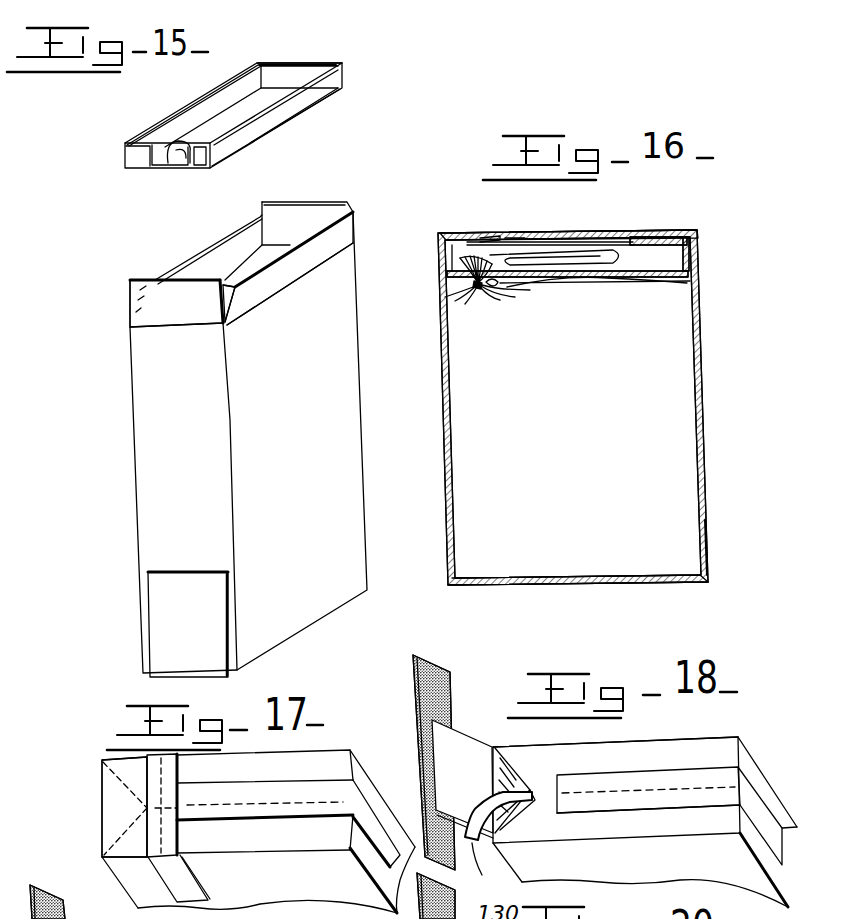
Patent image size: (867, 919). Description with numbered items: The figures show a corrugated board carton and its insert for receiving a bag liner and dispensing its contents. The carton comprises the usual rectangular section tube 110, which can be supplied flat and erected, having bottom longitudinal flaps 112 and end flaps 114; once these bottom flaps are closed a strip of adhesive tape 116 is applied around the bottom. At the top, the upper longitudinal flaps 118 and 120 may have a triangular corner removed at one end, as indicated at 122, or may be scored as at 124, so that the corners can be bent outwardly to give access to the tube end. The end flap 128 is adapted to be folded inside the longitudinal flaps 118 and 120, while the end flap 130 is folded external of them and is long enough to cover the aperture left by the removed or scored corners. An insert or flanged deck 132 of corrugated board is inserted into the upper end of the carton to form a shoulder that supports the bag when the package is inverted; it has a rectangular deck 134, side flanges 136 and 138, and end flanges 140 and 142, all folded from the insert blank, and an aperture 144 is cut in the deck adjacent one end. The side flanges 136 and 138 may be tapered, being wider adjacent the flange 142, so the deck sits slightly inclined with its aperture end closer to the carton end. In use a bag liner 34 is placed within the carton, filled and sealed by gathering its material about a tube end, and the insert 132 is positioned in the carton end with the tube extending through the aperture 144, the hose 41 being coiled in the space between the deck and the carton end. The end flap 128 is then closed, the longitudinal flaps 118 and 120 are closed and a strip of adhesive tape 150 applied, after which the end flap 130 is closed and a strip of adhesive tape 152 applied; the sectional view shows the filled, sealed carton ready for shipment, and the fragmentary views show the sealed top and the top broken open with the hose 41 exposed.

In FIG. 16, the bag liner 34 is at (670, 297).
In FIG. 16, the hose 41 is at (600, 247).
In FIG. 18, the hose 41 is at (498, 851).
In FIG. 15, the rectangular section tube 110 is at (340, 455).
In FIG. 16, the rectangular section tube 110 is at (700, 370).
In FIG. 18, the rectangular section tube 110 is at (645, 822).
In FIG. 16, the bottom longitudinal flaps 112 is at (552, 587).
In FIG. 16, the end flaps 114 is at (473, 578).
In FIG. 15, the strip of adhesive tape 116 is at (200, 605).
In FIG. 16, the strip of adhesive tape 116 is at (707, 520).
In FIG. 15, the upper longitudinal flap 118 is at (275, 275).
In FIG. 18, the upper longitudinal flap 118 is at (697, 822).
In FIG. 15, the upper longitudinal flap 120 is at (213, 253).
In FIG. 16, the upper longitudinal flap 120 is at (595, 240).
In FIG. 18, the upper longitudinal flap 120 is at (685, 748).
In FIG. 15, the removed triangular corner 122 is at (140, 307).
In FIG. 18, the removed triangular corner 122 is at (513, 767).
In FIG. 17, the scoring 124 is at (101, 823).
In FIG. 15, the end flap 128 is at (317, 207).
In FIG. 16, the end flap 128 is at (648, 240).
In FIG. 15, the end flap 130 is at (180, 307).
In FIG. 16, the end flap 130 is at (475, 237).
In FIG. 17, the end flap 130 is at (130, 837).
In FIG. 18, the end flap 130 is at (457, 742).
In FIG. 15, the insert 132 is at (257, 143).
In FIG. 16, the insert 132 is at (607, 280).
In FIG. 15, the rectangular deck 134 is at (266, 92).
In FIG. 16, the rectangular deck 134 is at (543, 277).
In FIG. 15, the side flange 136 is at (190, 100).
In FIG. 15, the side flange 138 is at (283, 108).
In FIG. 15, the end flange 140 is at (140, 155).
In FIG. 16, the end flange 140 is at (442, 258).
In FIG. 18, the end flange 140 is at (510, 757).
In FIG. 15, the end flange 142 is at (303, 68).
In FIG. 16, the end flange 142 is at (693, 250).
In FIG. 15, the aperture 144 is at (180, 163).
In FIG. 16, the aperture 144 is at (462, 277).
In FIG. 16, the strip of adhesive tape 150 is at (677, 230).
In FIG. 17, the strip of adhesive tape 150 is at (333, 793).
In FIG. 18, the strip of adhesive tape 150 is at (707, 777).
In FIG. 16, the strip of adhesive tape 152 is at (497, 237).
In FIG. 17, the strip of adhesive tape 152 is at (182, 887).
In FIG. 18, the strip of adhesive tape 152 is at (448, 677).